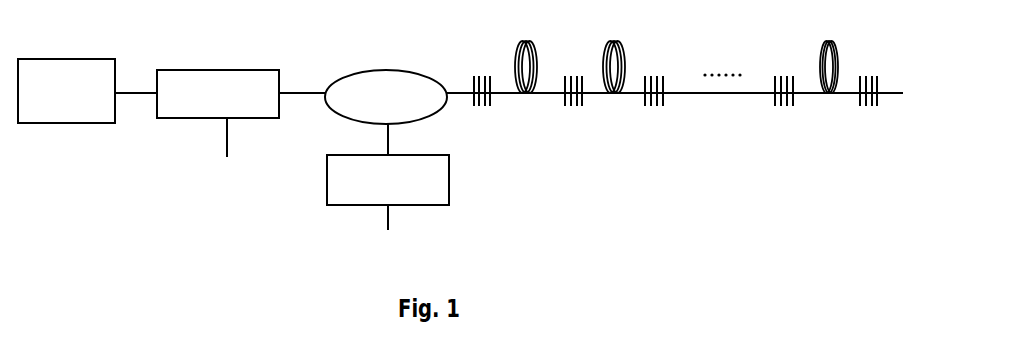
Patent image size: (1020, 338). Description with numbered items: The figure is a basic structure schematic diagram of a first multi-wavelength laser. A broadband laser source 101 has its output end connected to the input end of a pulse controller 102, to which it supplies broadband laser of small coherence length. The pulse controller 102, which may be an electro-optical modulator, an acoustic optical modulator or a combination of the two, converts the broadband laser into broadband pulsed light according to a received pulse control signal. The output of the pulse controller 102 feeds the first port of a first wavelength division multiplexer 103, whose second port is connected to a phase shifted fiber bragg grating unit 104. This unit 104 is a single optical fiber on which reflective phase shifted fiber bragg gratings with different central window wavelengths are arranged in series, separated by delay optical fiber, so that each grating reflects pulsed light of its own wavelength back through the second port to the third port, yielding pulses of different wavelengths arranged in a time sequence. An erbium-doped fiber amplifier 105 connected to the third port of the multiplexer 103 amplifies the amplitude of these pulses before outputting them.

The broadband laser source 101 is at (43, 58).
The pulse controller 102 is at (214, 70).
The first wavelength division multiplexer 103 is at (386, 67).
The phase shifted fiber bragg grating unit 104 is at (887, 92).
The erbium-doped fiber amplifier 105 is at (447, 192).